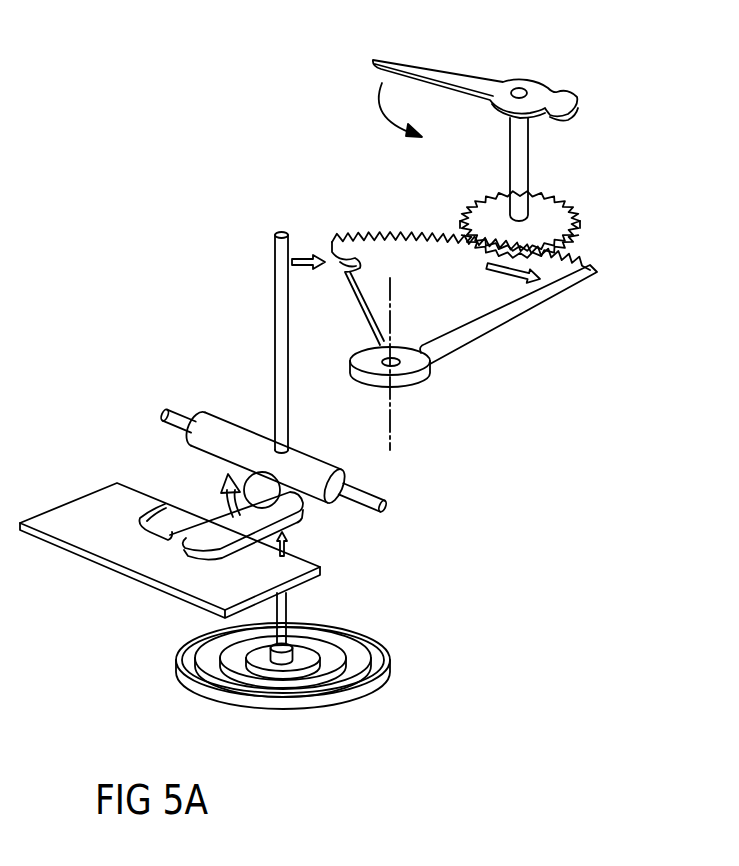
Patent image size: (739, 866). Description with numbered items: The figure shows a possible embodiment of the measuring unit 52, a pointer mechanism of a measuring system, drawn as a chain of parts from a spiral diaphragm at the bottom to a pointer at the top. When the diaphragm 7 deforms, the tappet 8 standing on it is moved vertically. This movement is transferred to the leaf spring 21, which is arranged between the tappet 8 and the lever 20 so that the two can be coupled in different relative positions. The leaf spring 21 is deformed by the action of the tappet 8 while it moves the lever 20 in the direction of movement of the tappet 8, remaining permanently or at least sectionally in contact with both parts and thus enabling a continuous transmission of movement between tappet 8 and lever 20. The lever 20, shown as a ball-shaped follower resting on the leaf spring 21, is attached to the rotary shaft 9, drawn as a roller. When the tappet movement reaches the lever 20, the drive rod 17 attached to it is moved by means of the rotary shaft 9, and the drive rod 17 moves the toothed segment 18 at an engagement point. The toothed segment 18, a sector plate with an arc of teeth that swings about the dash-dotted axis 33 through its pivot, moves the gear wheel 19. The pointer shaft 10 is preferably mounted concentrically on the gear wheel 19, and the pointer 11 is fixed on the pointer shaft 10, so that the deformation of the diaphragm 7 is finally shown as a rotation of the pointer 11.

The measuring unit 52 is at (228, 165).
The pointer 11 is at (478, 82).
The pointer shaft 10 is at (522, 174).
The gear wheel 19 is at (495, 203).
The toothed segment 18 is at (388, 252).
The pivot axis 33 is at (392, 309).
The drive rod 17 is at (277, 318).
The rotary shaft 9 is at (318, 470).
The lever 20 is at (258, 482).
The leaf spring 21 is at (201, 513).
The tappet 8 is at (300, 635).
The diaphragm 7 is at (390, 650).